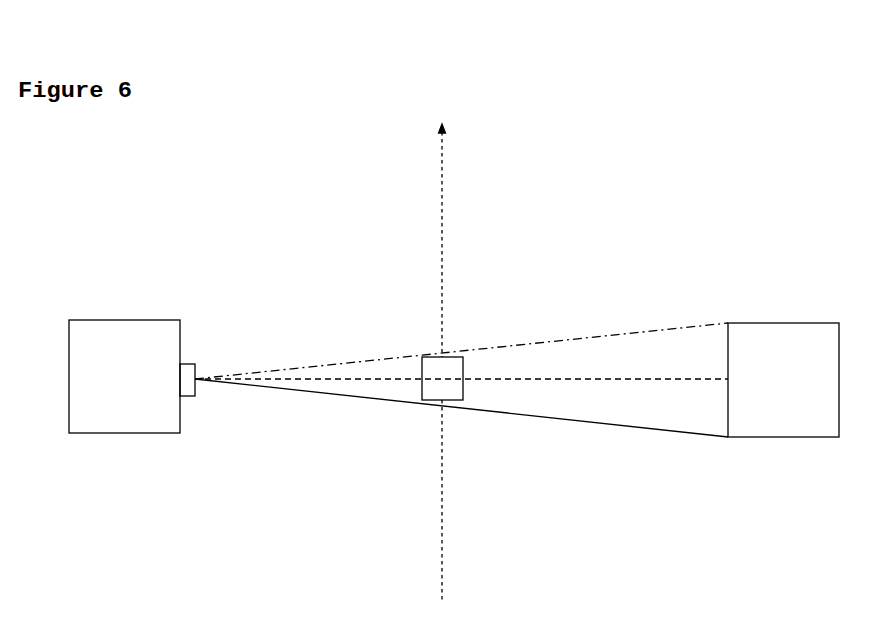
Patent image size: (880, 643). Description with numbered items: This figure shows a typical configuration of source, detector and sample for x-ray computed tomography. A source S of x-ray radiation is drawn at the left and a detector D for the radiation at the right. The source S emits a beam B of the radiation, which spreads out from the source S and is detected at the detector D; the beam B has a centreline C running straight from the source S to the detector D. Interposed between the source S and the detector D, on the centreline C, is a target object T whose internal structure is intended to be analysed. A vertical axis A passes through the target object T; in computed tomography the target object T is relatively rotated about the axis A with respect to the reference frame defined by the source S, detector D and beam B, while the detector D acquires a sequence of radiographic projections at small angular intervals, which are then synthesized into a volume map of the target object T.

The source S is at (132, 376).
The target object T is at (442, 378).
The detector D is at (783, 380).
The axis A is at (455, 363).
The beam B is at (461, 341).
The centreline C is at (461, 392).